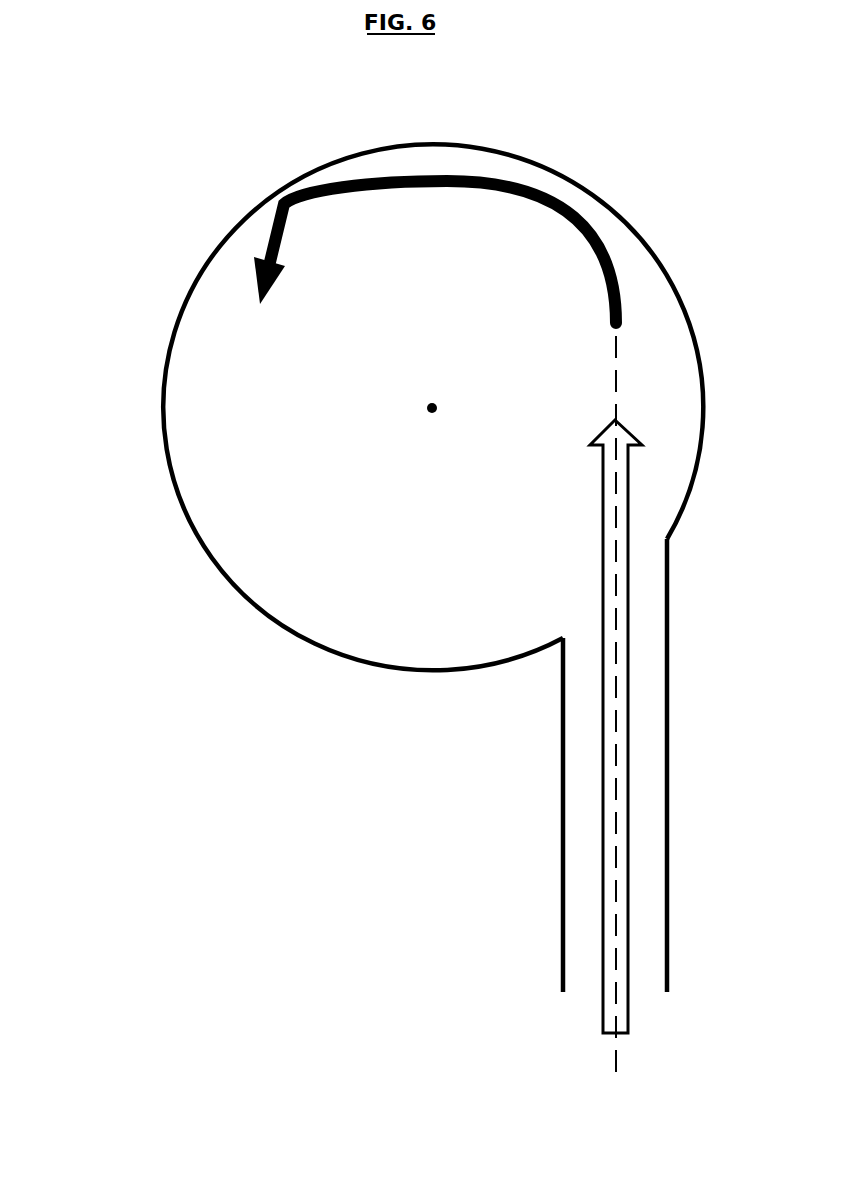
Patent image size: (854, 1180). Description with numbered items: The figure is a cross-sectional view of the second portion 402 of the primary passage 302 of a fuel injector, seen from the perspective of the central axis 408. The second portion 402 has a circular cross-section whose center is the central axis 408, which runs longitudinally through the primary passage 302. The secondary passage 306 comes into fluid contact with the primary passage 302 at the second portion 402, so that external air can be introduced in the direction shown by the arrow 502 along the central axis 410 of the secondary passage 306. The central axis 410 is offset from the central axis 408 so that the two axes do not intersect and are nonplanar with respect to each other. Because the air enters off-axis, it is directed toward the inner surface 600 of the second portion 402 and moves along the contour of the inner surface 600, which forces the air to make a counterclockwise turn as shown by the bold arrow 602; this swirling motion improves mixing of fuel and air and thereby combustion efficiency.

The primary passage 302 is at (398, 540).
The second portion 402 is at (160, 432).
The secondary passage 306 is at (562, 755).
The arrow 502 is at (630, 752).
The bold arrow 602 is at (552, 200).
The central axis 408 is at (426, 410).
The central axis 410 is at (617, 1075).
The inner surface 600 is at (263, 610).